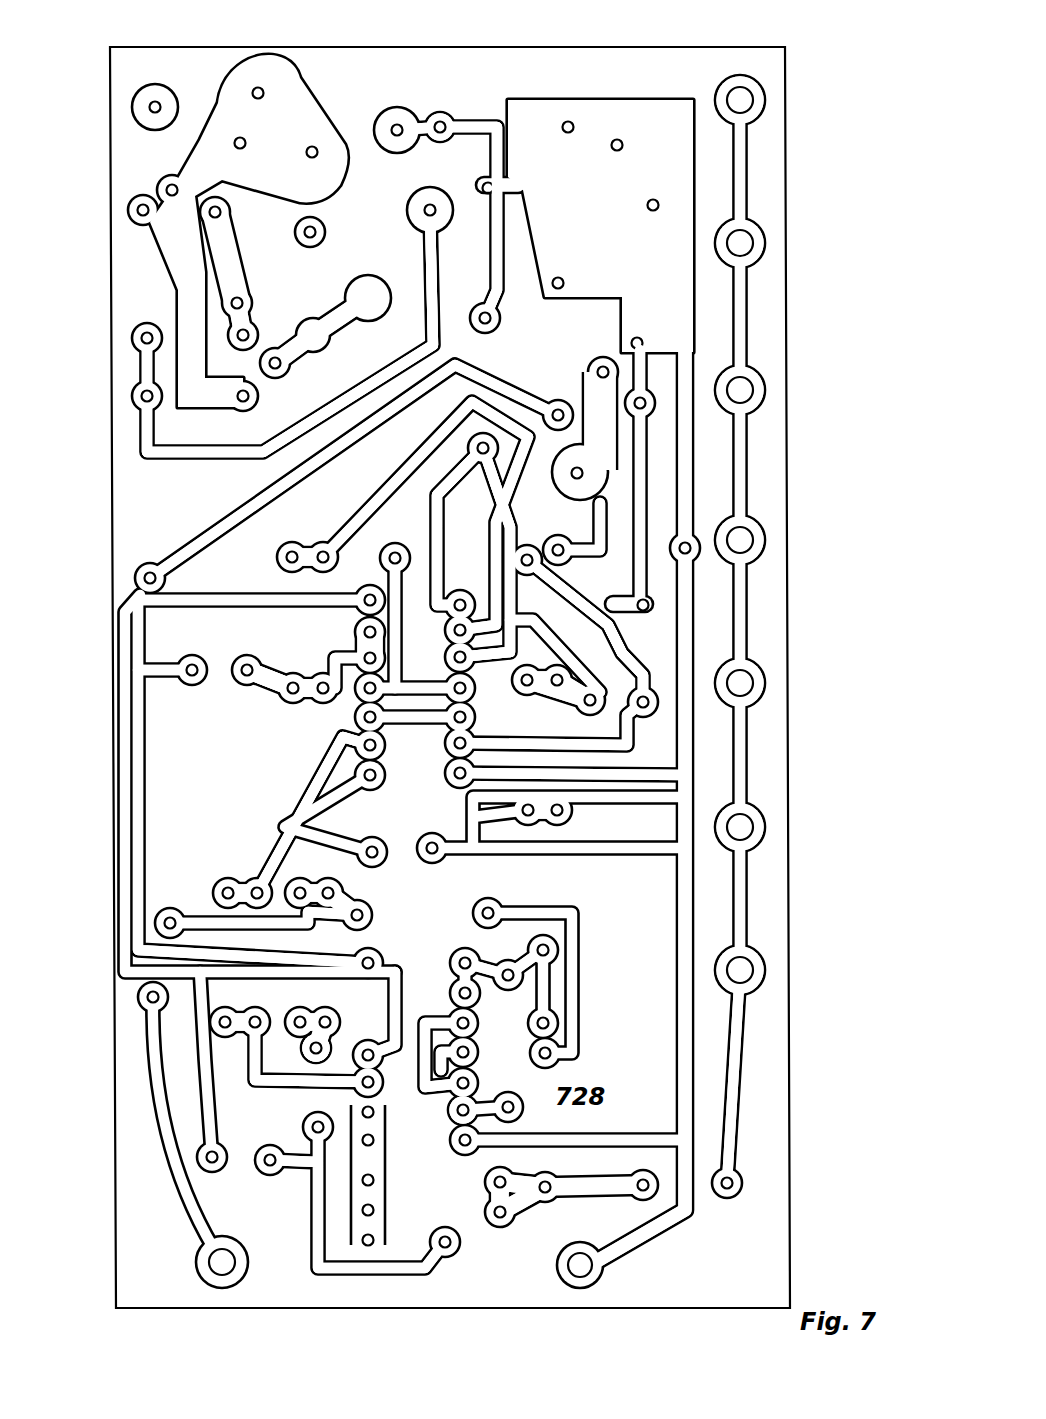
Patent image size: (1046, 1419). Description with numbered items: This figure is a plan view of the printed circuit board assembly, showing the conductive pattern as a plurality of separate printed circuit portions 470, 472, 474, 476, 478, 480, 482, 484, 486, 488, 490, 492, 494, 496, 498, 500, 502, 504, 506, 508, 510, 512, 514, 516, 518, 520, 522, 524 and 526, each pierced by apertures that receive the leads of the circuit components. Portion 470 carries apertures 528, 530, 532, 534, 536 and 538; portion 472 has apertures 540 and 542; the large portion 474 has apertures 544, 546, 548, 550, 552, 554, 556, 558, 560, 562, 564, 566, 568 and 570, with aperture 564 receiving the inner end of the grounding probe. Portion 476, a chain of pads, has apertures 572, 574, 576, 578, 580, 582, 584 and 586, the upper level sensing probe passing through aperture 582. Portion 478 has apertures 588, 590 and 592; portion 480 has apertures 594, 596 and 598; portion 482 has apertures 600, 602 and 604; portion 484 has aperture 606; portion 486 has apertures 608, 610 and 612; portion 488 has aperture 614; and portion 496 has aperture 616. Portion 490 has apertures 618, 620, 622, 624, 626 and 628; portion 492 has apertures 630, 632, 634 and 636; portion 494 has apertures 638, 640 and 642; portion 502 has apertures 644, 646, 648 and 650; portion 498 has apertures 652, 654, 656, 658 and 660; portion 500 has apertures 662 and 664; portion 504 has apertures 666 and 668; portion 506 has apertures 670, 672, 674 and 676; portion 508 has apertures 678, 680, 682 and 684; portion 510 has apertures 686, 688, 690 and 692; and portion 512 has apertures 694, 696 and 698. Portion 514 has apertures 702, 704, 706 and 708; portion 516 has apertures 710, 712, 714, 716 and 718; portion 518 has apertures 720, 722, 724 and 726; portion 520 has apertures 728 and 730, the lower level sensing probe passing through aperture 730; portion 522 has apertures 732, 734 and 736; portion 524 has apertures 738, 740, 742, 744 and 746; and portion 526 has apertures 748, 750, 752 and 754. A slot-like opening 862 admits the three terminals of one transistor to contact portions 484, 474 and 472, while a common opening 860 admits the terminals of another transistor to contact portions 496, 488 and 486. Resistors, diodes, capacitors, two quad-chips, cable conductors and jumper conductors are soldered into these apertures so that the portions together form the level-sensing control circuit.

The printed circuit portion 470 is at (305, 74).
The printed circuit portion 472 is at (419, 95).
The printed circuit portion 474 is at (533, 92).
The printed circuit portion 476 is at (719, 73).
The printed circuit portion 478 is at (240, 245).
The printed circuit portion 480 is at (358, 278).
The printed circuit portion 482 is at (166, 474).
The printed circuit portion 484 is at (484, 277).
The printed circuit portion 486 is at (575, 361).
The printed circuit portion 488 is at (661, 500).
The printed circuit portion 490 is at (115, 619).
The printed circuit portion 492 is at (442, 432).
The printed circuit portion 494 is at (444, 475).
The printed circuit portion 496 is at (628, 653).
The printed circuit portion 498 is at (251, 701).
The printed circuit portion 500 is at (370, 537).
The printed circuit portion 502 is at (560, 650).
The printed circuit portion 504 is at (355, 744).
The printed circuit portion 506 is at (274, 807).
The printed circuit portion 508 is at (352, 812).
The printed circuit portion 510 is at (162, 930).
The printed circuit portion 512 is at (577, 904).
The printed circuit portion 514 is at (572, 970).
The printed circuit portion 516 is at (395, 990).
The printed circuit portion 518 is at (531, 1119).
The printed circuit portion 520 is at (142, 1052).
The printed circuit portion 522 is at (268, 1097).
The printed circuit portion 524 is at (377, 1265).
The printed circuit portion 526 is at (609, 1131).
The aperture 528 is at (243, 396).
The aperture 530 is at (143, 210).
The aperture 532 is at (172, 190).
The aperture 534 is at (240, 143).
The aperture 536 is at (258, 93).
The aperture 538 is at (312, 152).
The aperture 540 is at (397, 130).
The aperture 542 is at (440, 127).
The aperture 544 is at (568, 127).
The aperture 546 is at (617, 145).
The aperture 548 is at (558, 283).
The aperture 550 is at (653, 205).
The aperture 552 is at (637, 343).
The aperture 554 is at (685, 548).
The aperture 556 is at (643, 702).
The aperture 558 is at (460, 773).
The aperture 560 is at (432, 848).
The aperture 562 is at (465, 1140).
The aperture 564 is at (580, 1265).
The aperture 566 is at (445, 1242).
The aperture 568 is at (318, 1127).
The aperture 570 is at (270, 1160).
The aperture 572 is at (745, 100).
The aperture 574 is at (745, 243).
The aperture 576 is at (745, 390).
The aperture 578 is at (745, 540).
The aperture 580 is at (745, 683).
The aperture 582 is at (745, 827).
The aperture 584 is at (745, 970).
The aperture 586 is at (740, 1183).
The aperture 588 is at (215, 212).
The aperture 590 is at (237, 303).
The aperture 592 is at (243, 335).
The aperture 594 is at (275, 363).
The aperture 596 is at (313, 335).
The aperture 598 is at (368, 298).
The aperture 600 is at (147, 338).
The aperture 602 is at (147, 396).
The aperture 604 is at (430, 210).
The aperture 606 is at (485, 318).
The aperture 608 is at (603, 372).
The aperture 610 is at (577, 473).
The aperture 612 is at (558, 550).
The aperture 614 is at (640, 403).
The aperture 616 is at (527, 560).
The aperture 618 is at (558, 415).
The aperture 620 is at (150, 578).
The aperture 622 is at (370, 600).
The aperture 624 is at (192, 670).
The aperture 626 is at (368, 963).
The aperture 628 is at (212, 1157).
The aperture 630 is at (292, 557).
The aperture 632 is at (323, 557).
The aperture 634 is at (460, 657).
The aperture 636 is at (460, 743).
The aperture 638 is at (483, 448).
The aperture 640 is at (447, 600).
The aperture 642 is at (460, 688).
The aperture 644 is at (460, 605).
The aperture 646 is at (527, 680).
The aperture 648 is at (557, 680).
The aperture 650 is at (590, 700).
The aperture 652 is at (247, 670).
The aperture 654 is at (293, 688).
The aperture 656 is at (323, 688).
The aperture 658 is at (370, 658).
The aperture 660 is at (370, 632).
The aperture 662 is at (395, 558).
The aperture 664 is at (370, 717).
The aperture 666 is at (370, 745).
The aperture 668 is at (460, 717).
The aperture 670 is at (228, 893).
The aperture 672 is at (257, 893).
The aperture 674 is at (372, 852).
The aperture 676 is at (368, 747).
The aperture 678 is at (370, 775).
The aperture 680 is at (528, 810).
The aperture 682 is at (557, 810).
The aperture 684 is at (368, 1055).
The aperture 686 is at (170, 923).
The aperture 688 is at (300, 893).
The aperture 690 is at (328, 893).
The aperture 692 is at (357, 915).
The aperture 694 is at (488, 913).
The aperture 696 is at (543, 1023).
The aperture 698 is at (545, 1053).
The aperture 702 is at (465, 963).
The aperture 704 is at (465, 993).
The aperture 706 is at (508, 975).
The aperture 708 is at (543, 950).
The aperture 710 is at (325, 1022).
The aperture 712 is at (316, 1048).
The aperture 714 is at (300, 1022).
The aperture 716 is at (316, 1048).
The aperture 718 is at (316, 1048).
The aperture 720 is at (463, 1023).
The aperture 722 is at (463, 1052).
The aperture 724 is at (463, 1083).
The aperture 726 is at (463, 1110).
The aperture 728 is at (153, 997).
The aperture 730 is at (222, 1262).
The aperture 732 is at (225, 1022).
The aperture 734 is at (255, 1022).
The aperture 736 is at (368, 1082).
The aperture 738 is at (368, 1112).
The aperture 740 is at (368, 1140).
The aperture 742 is at (368, 1180).
The aperture 744 is at (368, 1210).
The aperture 746 is at (368, 1240).
The aperture 748 is at (500, 1182).
The aperture 750 is at (500, 1212).
The aperture 752 is at (545, 1187).
The aperture 754 is at (643, 1185).
The common opening 860 is at (643, 607).
The slot-like opening 862 is at (488, 190).